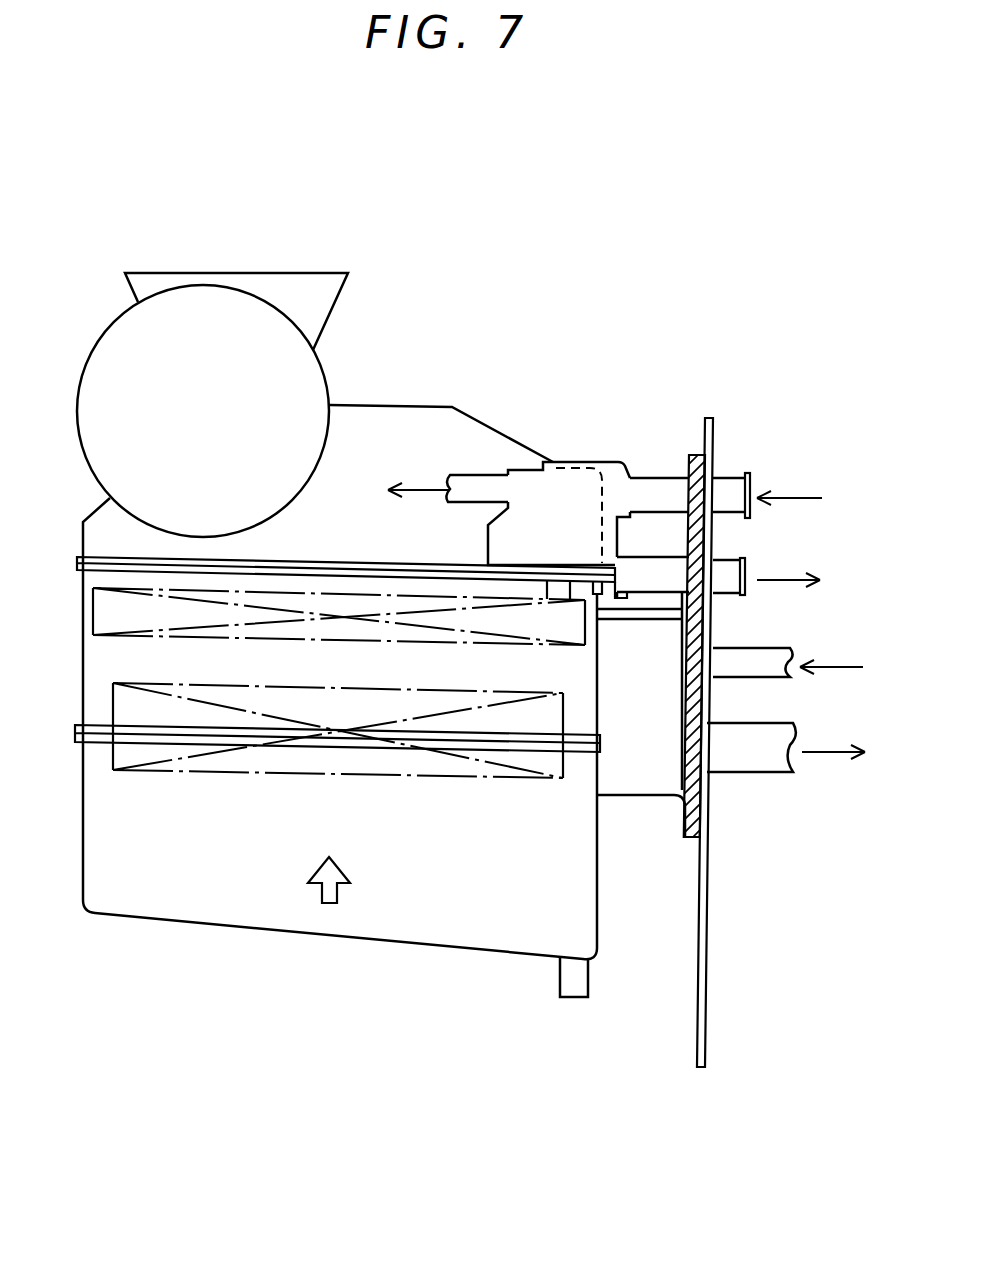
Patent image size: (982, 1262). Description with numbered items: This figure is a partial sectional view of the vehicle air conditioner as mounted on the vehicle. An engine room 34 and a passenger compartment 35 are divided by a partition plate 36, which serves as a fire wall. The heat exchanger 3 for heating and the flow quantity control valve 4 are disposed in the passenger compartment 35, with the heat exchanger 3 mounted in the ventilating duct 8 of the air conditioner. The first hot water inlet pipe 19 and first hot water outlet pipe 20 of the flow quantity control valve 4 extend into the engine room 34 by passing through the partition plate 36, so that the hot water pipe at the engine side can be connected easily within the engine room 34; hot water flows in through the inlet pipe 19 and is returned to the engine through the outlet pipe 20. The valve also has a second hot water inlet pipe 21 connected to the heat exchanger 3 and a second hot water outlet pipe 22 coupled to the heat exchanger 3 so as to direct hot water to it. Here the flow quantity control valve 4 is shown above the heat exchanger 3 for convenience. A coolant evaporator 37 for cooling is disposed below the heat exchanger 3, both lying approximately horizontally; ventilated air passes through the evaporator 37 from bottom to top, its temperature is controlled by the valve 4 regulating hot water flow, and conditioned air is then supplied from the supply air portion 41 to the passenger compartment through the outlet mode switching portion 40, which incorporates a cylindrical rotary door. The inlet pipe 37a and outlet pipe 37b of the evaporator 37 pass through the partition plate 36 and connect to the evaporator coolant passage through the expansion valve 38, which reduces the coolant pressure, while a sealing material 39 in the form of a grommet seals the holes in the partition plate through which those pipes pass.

The heat exchanger 3 is at (110, 610).
The flow quantity control valve 4 is at (552, 496).
The ventilating duct 8 is at (82, 540).
The first hot water inlet pipe 19 is at (662, 492).
The first hot water outlet pipe 20 is at (723, 578).
The second hot water inlet pipe 21 is at (557, 590).
The second hot water outlet pipe 22 is at (475, 483).
The engine room 34 is at (777, 937).
The passenger compartment 35 is at (643, 1028).
The partition plate 36 is at (702, 1050).
The coolant evaporator 37 is at (210, 757).
The inlet pipe 37a is at (772, 665).
The outlet pipe 37b is at (775, 742).
The expansion valve 38 is at (633, 787).
The sealing material 39 is at (695, 822).
The outlet mode switching portion 40 is at (297, 397).
The supply air portion 41 is at (315, 297).